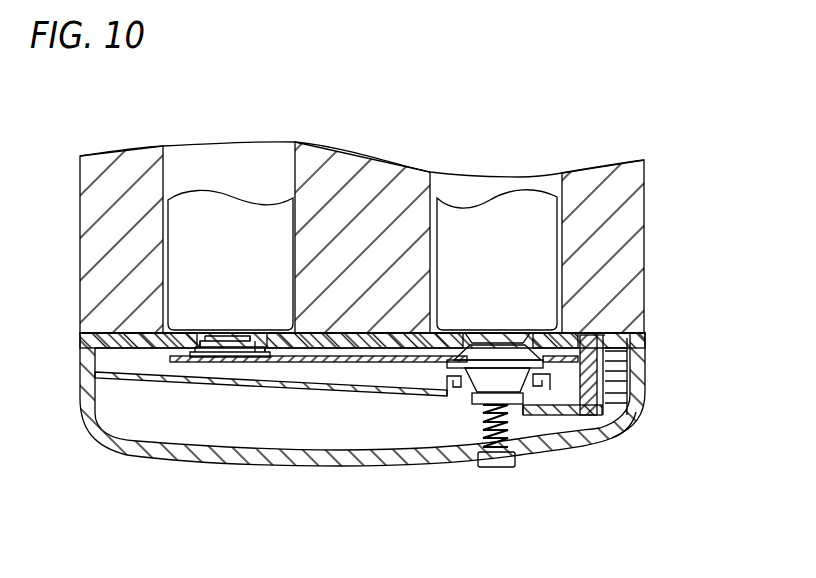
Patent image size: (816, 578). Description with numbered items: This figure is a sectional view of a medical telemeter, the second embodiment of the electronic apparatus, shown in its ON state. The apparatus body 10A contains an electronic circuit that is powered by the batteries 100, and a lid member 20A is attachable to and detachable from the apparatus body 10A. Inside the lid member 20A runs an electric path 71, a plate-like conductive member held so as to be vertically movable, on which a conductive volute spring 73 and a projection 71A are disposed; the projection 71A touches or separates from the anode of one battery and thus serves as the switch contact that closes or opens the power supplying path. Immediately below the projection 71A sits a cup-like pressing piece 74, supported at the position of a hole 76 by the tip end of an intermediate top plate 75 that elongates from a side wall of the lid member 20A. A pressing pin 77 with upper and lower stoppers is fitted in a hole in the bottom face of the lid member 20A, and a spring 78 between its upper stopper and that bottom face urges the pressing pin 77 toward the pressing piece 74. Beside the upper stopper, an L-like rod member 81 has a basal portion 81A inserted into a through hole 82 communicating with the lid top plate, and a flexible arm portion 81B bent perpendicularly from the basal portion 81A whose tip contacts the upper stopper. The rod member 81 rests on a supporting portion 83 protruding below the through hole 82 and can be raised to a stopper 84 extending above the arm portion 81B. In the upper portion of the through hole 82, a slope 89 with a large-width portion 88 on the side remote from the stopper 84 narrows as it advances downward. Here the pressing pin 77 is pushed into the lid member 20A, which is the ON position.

The apparatus body 10A is at (645, 183).
The batteries 100 is at (250, 213).
The lid member 20A is at (97, 437).
The volute spring 73 is at (227, 333).
The electric path 71 is at (305, 360).
The projection 71A is at (489, 333).
The intermediate top plate 75 is at (257, 388).
The hole 76 is at (460, 375).
The pressing piece 74 is at (482, 377).
The pressing pin 77 is at (497, 468).
The spring 78 is at (510, 418).
The rod member 81 is at (625, 405).
The basal portion 81A is at (603, 333).
The arm portion 81B is at (565, 440).
The through hole 82 is at (608, 363).
The supporting portion 83 is at (612, 447).
The stopper 84 is at (582, 333).
The large-width portion 88 is at (608, 348).
The slope 89 is at (607, 394).